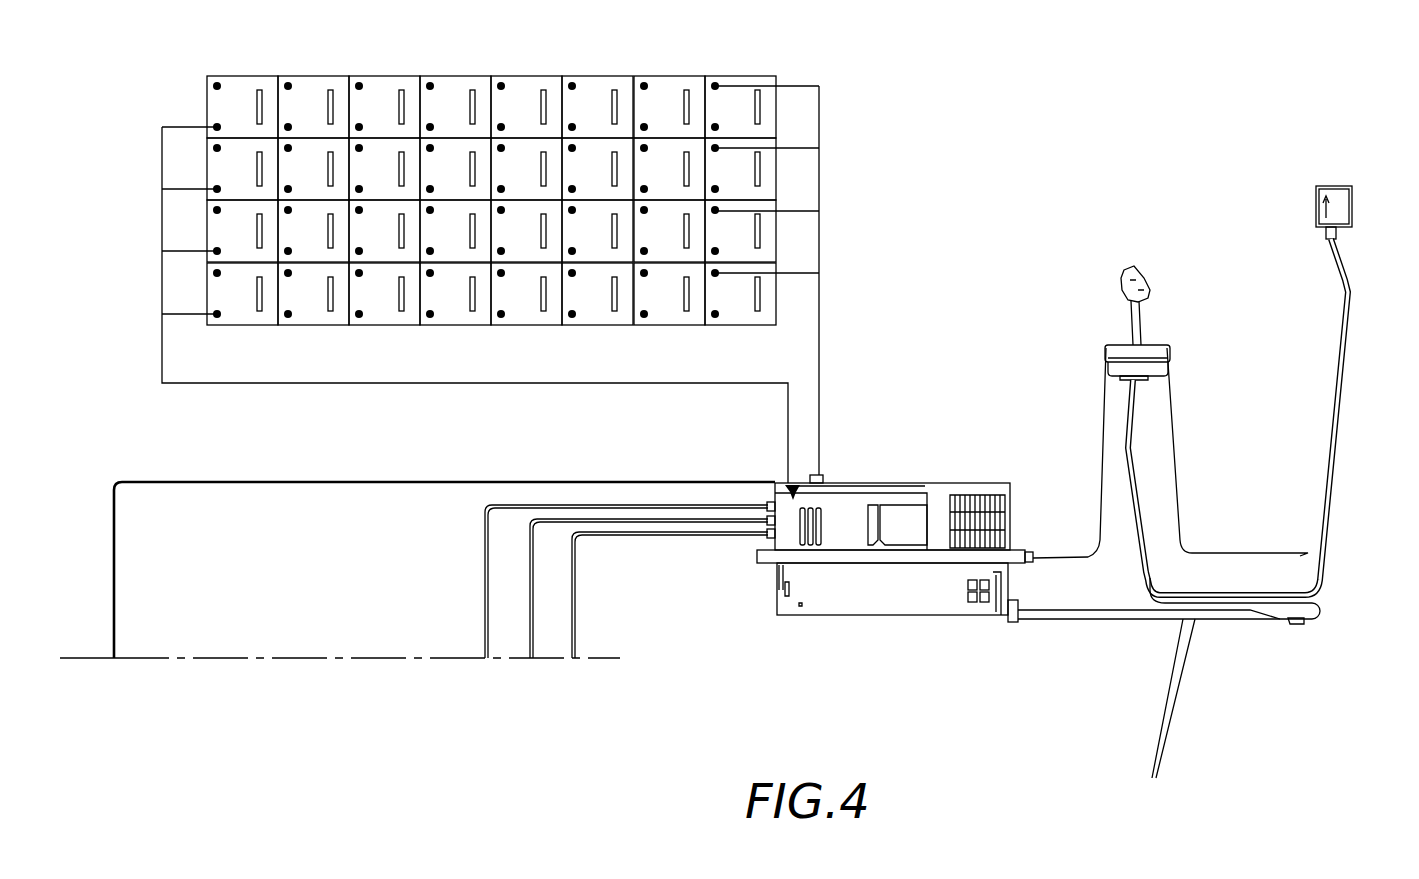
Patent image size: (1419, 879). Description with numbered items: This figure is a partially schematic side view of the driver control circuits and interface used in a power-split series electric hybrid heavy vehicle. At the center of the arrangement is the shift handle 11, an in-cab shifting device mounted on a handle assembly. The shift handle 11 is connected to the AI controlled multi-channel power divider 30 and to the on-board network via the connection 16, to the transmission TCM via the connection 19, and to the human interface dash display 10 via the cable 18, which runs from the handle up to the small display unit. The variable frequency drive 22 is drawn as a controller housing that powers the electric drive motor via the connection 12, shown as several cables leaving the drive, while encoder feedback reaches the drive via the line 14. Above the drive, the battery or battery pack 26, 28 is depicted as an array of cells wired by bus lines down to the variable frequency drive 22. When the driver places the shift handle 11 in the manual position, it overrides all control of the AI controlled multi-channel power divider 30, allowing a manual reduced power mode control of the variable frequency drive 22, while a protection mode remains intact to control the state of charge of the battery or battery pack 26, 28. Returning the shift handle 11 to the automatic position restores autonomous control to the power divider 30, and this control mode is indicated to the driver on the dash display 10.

The human interface dash display 10 is at (1310, 204).
The shift handle 11 is at (1116, 260).
The connection to electric drive motor 12 is at (480, 603).
The encoder feedback connection 14 is at (120, 547).
The on-board network connection 16 is at (1257, 625).
The dash display connection 18 is at (1334, 538).
The transmission TCM connection 19 is at (1180, 707).
The variable frequency drive 22 is at (906, 468).
The battery 26 is at (794, 203).
The battery pack 28 is at (782, 70).
The AI controlled multi-channel power divider 30 is at (986, 624).